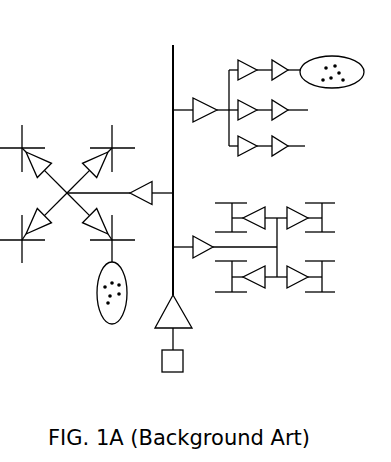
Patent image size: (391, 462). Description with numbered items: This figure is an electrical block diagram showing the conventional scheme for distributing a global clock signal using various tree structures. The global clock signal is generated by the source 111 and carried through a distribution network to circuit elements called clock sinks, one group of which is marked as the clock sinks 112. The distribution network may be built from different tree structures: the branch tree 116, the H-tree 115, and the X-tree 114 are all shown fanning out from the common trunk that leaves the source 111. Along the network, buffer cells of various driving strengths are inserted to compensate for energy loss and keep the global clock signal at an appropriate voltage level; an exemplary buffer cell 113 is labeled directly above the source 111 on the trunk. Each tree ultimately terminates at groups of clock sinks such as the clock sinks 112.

The source 111 is at (175, 370).
The group of clock sinks 112 is at (94, 310).
The buffer cell 113 is at (197, 316).
The X-tree 114 is at (76, 108).
The H-tree 115 is at (307, 189).
The branch tree 116 is at (268, 85).